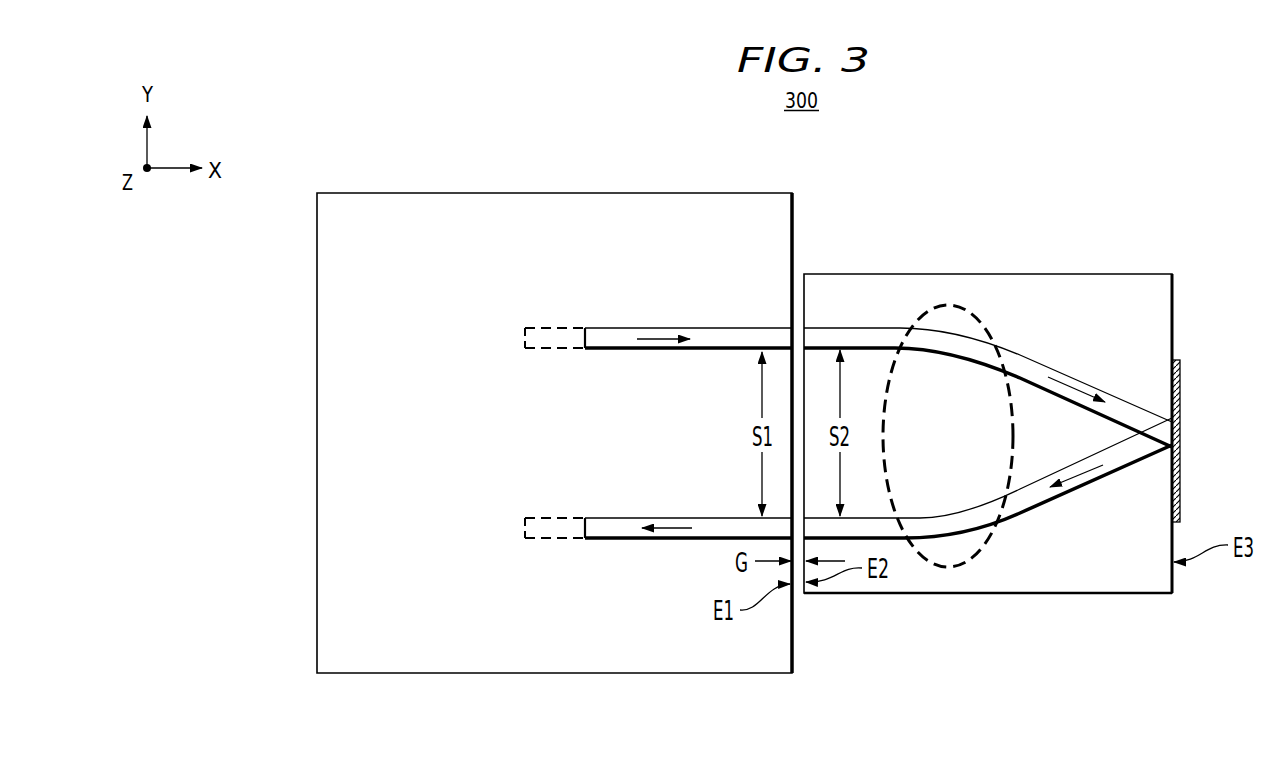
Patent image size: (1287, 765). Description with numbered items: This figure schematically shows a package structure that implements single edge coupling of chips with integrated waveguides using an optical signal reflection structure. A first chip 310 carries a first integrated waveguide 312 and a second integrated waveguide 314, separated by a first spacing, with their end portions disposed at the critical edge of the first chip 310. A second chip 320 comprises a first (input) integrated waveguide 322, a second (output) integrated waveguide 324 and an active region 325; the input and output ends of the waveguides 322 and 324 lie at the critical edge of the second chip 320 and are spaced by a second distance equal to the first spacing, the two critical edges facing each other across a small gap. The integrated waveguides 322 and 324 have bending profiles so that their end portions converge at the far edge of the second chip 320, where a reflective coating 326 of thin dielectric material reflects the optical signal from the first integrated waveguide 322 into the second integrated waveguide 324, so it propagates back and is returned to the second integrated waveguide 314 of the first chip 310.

The first chip 310 is at (658, 192).
The first integrated waveguide 312 is at (656, 326).
The second integrated waveguide 314 is at (656, 516).
The second chip 320 is at (1078, 273).
The first (input) integrated waveguide 322 is at (1040, 358).
The second (output) integrated waveguide 324 is at (1023, 515).
The active region 325 is at (982, 327).
The reflective coating 326 is at (1180, 404).